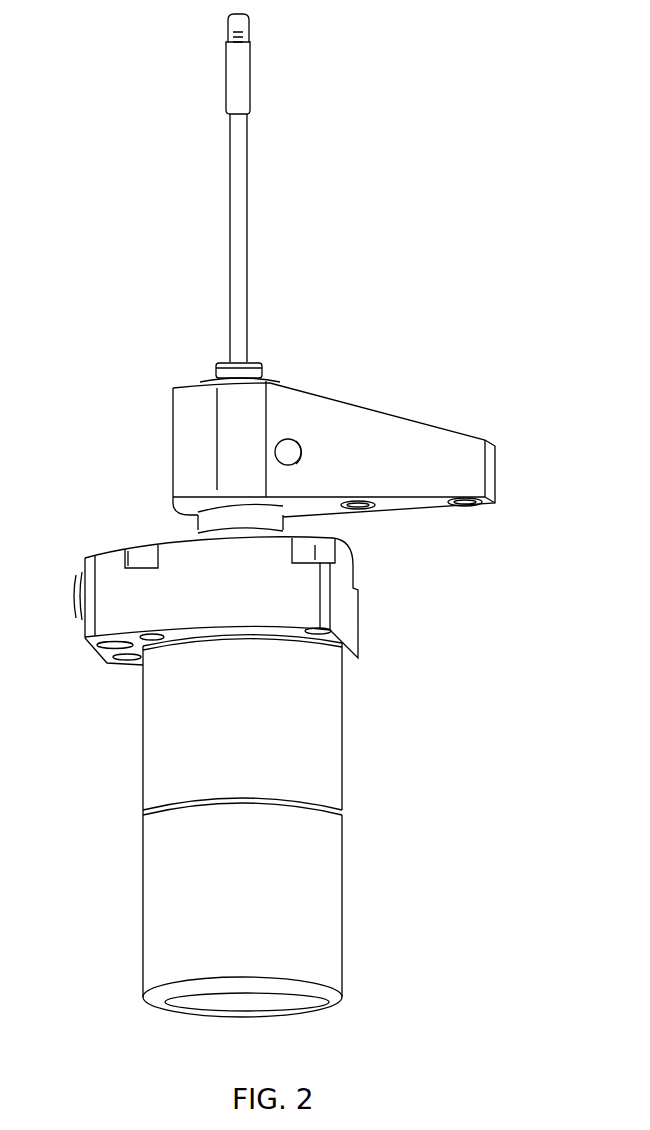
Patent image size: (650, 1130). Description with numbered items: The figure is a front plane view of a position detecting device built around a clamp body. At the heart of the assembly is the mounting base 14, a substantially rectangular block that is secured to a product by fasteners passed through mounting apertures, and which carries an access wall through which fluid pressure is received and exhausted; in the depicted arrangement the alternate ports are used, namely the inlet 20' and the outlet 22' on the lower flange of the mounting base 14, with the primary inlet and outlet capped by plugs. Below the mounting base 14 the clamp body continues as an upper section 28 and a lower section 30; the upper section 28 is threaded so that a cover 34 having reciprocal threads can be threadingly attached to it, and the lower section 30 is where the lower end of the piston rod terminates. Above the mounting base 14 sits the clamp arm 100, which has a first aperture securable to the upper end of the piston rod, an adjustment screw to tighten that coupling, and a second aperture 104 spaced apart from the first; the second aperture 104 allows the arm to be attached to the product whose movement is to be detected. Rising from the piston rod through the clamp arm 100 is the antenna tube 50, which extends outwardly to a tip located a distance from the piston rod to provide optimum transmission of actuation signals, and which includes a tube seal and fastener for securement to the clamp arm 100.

The antenna tube 50 is at (255, 243).
The clamp arm 100 is at (346, 459).
The second aperture 104 is at (468, 507).
The mounting base 14 is at (232, 635).
The outlet 22' is at (89, 673).
The inlet 20' is at (116, 694).
The upper section 28 is at (346, 723).
The lower section 30 is at (347, 900).
The cover 34 is at (343, 988).